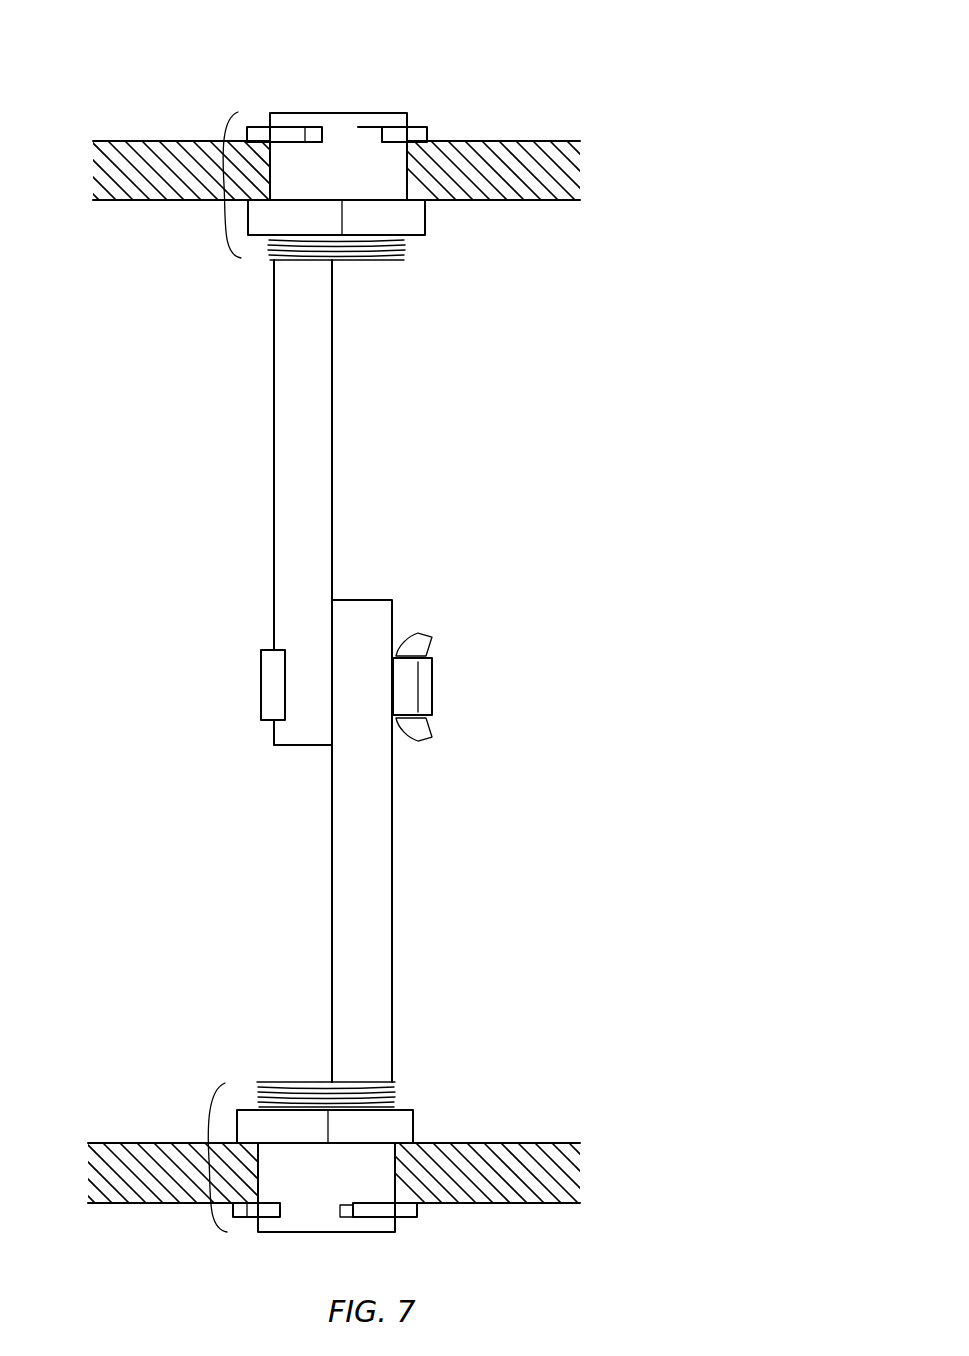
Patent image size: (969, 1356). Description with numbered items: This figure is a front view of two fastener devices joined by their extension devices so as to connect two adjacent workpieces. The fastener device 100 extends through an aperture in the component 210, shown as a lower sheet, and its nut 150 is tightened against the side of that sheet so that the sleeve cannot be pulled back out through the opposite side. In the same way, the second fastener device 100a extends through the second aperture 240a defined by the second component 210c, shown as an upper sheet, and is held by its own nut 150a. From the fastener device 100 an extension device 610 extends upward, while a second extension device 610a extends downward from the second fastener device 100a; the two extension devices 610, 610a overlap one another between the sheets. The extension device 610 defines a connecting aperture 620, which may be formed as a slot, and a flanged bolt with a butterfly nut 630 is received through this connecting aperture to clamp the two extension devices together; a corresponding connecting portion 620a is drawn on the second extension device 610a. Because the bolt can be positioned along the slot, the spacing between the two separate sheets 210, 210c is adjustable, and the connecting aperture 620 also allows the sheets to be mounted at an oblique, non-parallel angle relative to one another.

The fastener device 100 is at (195, 1160).
The second fastener device 100a is at (226, 187).
The nut 150 is at (413, 1125).
The nut of second fastener device 150a is at (427, 224).
The component 210 is at (540, 1160).
The second component 210c is at (552, 136).
The second aperture 240a is at (364, 183).
The extension device 610 is at (362, 967).
The second extension device 610a is at (316, 458).
The connecting aperture 620 is at (357, 710).
The connector 620a is at (305, 688).
The butterfly nut 630 is at (440, 671).